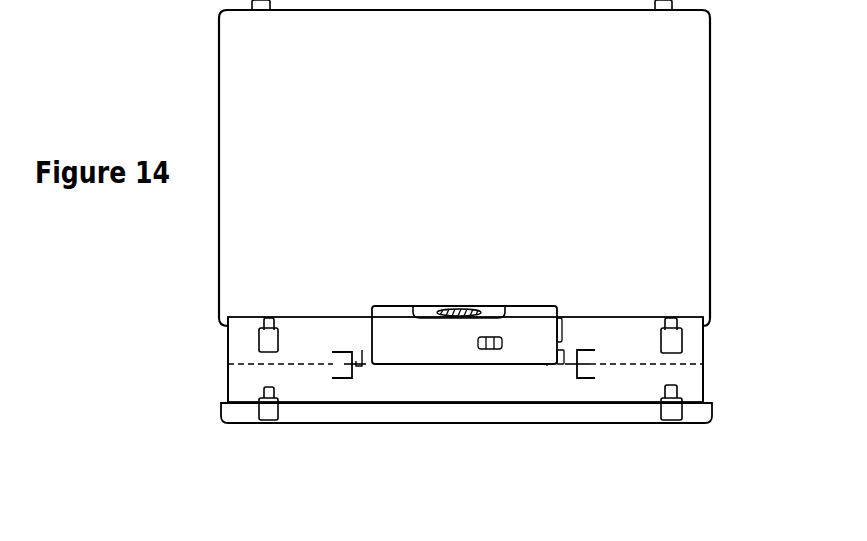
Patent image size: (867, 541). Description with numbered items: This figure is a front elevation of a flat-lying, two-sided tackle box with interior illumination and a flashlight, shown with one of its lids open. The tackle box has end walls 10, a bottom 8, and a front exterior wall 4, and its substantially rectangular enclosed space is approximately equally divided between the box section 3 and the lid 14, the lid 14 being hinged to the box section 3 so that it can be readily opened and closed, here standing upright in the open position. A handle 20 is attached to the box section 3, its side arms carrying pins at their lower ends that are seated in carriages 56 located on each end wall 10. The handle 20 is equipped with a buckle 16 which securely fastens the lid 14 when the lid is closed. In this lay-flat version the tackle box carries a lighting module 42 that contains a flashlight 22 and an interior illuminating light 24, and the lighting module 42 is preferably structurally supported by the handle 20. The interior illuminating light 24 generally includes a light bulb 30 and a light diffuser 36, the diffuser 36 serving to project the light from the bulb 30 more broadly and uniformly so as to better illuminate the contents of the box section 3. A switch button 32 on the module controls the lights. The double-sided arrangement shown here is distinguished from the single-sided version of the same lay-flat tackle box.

The lid 14 is at (219, 262).
The front exterior wall 4 is at (633, 385).
The bottom 8 is at (238, 366).
The end walls 10 is at (228, 340).
The box section 3 is at (704, 375).
The buckle 16 is at (270, 404).
The light bulb 30 is at (495, 311).
The light diffuser 36 is at (425, 308).
The interior illuminating light 24 is at (472, 311).
The switch button 32 is at (493, 350).
The lighting module 42 is at (547, 365).
The handle 20 is at (360, 350).
The flashlight 22 is at (559, 318).
The carriages 56 is at (582, 380).